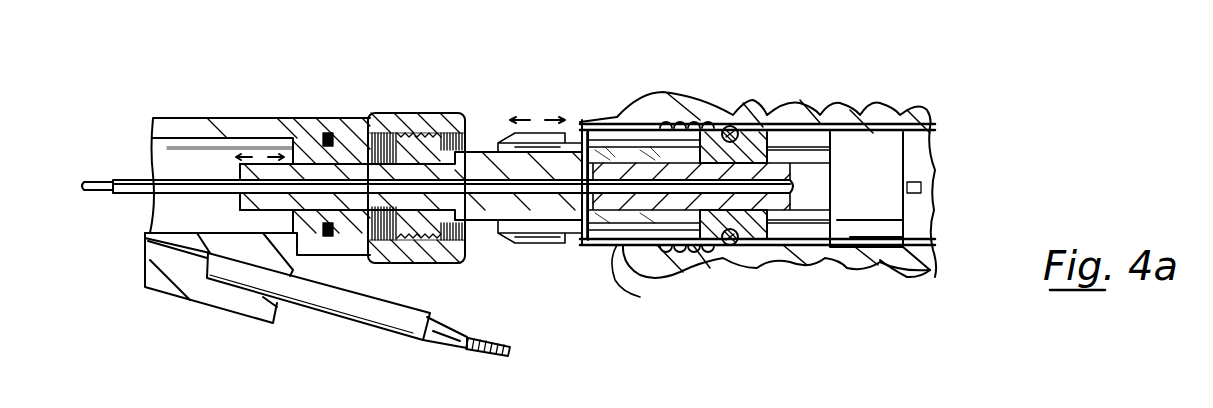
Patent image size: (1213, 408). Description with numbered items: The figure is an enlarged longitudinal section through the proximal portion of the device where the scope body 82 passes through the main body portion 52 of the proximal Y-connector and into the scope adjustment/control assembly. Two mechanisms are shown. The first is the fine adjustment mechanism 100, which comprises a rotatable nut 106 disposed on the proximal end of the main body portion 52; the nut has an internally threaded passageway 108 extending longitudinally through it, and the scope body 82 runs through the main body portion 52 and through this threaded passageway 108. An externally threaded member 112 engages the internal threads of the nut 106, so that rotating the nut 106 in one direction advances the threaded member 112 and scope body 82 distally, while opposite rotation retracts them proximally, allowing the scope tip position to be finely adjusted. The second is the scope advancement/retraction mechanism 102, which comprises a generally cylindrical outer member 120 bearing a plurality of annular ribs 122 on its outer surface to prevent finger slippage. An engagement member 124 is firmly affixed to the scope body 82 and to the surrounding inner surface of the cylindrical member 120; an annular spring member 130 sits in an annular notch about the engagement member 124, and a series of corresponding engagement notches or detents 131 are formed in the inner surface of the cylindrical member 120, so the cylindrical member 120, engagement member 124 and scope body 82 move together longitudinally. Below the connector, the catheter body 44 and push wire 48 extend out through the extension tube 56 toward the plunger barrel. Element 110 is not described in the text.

The scope body 82 is at (132, 177).
The main body portion 52 is at (223, 127).
The inner tube 110 is at (485, 213).
The fine adjustment mechanism 100 is at (370, 104).
The externally threaded member 112 is at (367, 140).
The rotatable nut 106 is at (460, 150).
The internally threaded passageway 108 is at (465, 147).
The scope advancement/retraction mechanism 102 is at (935, 45).
The engagement notches or detents 131 is at (702, 245).
The annular spring member 130 is at (737, 240).
The engagement member 124 is at (870, 147).
The annular ribs 122 is at (812, 283).
The cylindrical outer member 120 is at (880, 262).
The extension tube 56 is at (390, 313).
The catheter body 44 is at (457, 327).
The push wire 48 is at (510, 343).